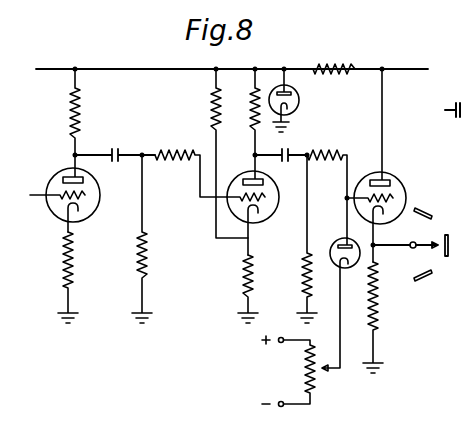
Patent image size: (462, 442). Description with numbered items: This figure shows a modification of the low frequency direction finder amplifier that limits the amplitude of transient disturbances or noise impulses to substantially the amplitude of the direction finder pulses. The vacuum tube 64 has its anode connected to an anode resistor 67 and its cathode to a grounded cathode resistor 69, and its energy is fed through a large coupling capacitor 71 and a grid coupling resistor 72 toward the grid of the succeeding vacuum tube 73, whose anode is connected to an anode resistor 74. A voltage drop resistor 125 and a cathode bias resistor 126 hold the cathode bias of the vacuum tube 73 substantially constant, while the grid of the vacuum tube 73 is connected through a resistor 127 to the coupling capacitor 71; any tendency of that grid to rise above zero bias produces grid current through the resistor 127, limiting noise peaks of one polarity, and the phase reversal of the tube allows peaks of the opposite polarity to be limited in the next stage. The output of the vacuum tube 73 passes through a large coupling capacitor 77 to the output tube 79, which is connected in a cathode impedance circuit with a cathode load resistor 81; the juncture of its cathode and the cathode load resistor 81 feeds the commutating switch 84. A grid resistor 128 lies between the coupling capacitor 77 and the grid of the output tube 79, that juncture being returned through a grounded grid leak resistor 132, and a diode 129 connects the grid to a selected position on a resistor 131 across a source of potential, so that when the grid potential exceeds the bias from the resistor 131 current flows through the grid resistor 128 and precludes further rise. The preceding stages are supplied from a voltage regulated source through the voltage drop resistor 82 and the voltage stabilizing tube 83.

The vacuum tube 64 is at (100, 210).
The anode resistor 67 is at (69, 110).
The grounded cathode resistor 69 is at (78, 270).
The coupling capacitor 71 is at (114, 150).
The grid coupling resistor 72 is at (152, 256).
The vacuum tube 73 is at (277, 207).
The anode resistor 74 is at (250, 110).
The coupling capacitor 77 is at (286, 150).
The output tube 79 is at (394, 180).
The cathode load resistor 81 is at (382, 324).
The voltage drop resistor 82 is at (339, 63).
The voltage stabilizing tube 83 is at (301, 102).
The commutating switch 84 is at (425, 254).
The voltage drop resistor 125 is at (212, 104).
The cathode bias resistor 126 is at (242, 272).
The resistor 127 is at (192, 150).
The grid resistor 128 is at (343, 150).
The diode 129 is at (342, 238).
The resistor 131 is at (305, 376).
The grounded grid leak resistor 132 is at (300, 280).